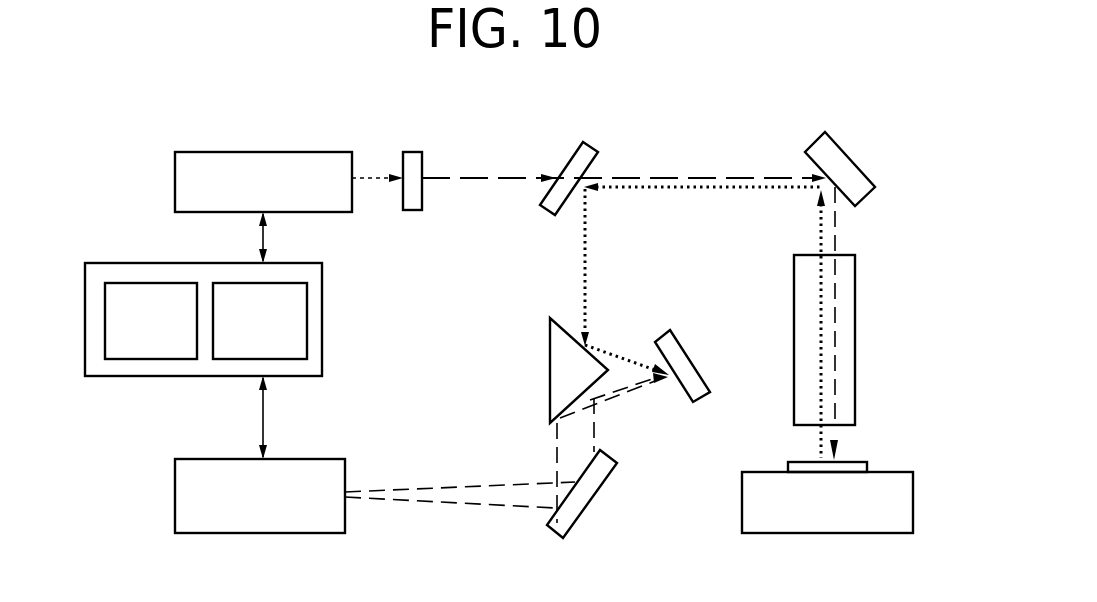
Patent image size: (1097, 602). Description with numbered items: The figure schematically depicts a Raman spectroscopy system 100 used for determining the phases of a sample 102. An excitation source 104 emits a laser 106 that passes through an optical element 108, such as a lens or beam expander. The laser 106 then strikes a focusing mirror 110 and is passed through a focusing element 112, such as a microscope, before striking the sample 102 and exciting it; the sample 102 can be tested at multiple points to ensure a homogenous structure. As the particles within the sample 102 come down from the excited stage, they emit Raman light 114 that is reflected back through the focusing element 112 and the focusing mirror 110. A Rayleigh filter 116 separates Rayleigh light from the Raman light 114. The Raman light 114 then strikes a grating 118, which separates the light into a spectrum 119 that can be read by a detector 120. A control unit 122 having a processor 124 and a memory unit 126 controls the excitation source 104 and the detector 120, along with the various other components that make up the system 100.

The Raman spectroscopy system 100 is at (893, 258).
The sample 102 is at (790, 462).
The excitation source 104 is at (290, 152).
The laser 106 is at (490, 180).
The optical element 108 is at (418, 152).
The focusing mirror 110 is at (812, 150).
The focusing element 112 is at (856, 365).
The Raman light 114 is at (588, 238).
The Rayleigh filter 116 is at (582, 145).
The grating 118 is at (665, 336).
The spectrum 119 is at (594, 500).
The detector 120 is at (175, 495).
The control unit 122 is at (125, 263).
The processor 124 is at (171, 337).
The memory unit 126 is at (279, 337).